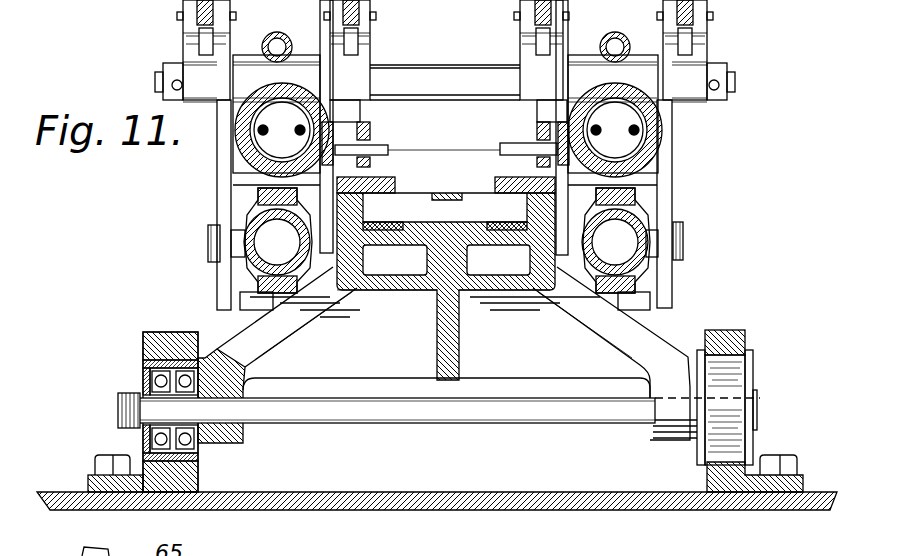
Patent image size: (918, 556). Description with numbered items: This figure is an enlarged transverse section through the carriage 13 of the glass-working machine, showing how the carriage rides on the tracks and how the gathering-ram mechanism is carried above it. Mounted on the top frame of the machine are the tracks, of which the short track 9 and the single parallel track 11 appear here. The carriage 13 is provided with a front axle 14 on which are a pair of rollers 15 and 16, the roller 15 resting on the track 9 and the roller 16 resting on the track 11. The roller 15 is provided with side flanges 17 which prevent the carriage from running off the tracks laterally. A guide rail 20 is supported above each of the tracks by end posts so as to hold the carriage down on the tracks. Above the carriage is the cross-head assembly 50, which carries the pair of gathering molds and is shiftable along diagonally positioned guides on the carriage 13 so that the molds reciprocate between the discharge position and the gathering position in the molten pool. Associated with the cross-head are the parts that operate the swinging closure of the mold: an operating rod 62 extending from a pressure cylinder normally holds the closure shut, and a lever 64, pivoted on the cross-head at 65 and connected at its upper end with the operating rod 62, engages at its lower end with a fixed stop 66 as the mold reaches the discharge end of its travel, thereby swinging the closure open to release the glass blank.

The track 9 is at (707, 476).
The track 11 is at (198, 471).
The carriage 13 is at (275, 314).
The front axle 14 is at (441, 424).
The roller 15 is at (738, 392).
The roller 16 is at (145, 374).
The side flange 17 is at (699, 356).
The guide rail 20 is at (145, 334).
The cross-head assembly 50 is at (412, 72).
The operating rod 62 is at (187, 37).
The lever 64 is at (217, 200).
The pivot 65 is at (165, 80).
The fixed stop 66 is at (208, 245).